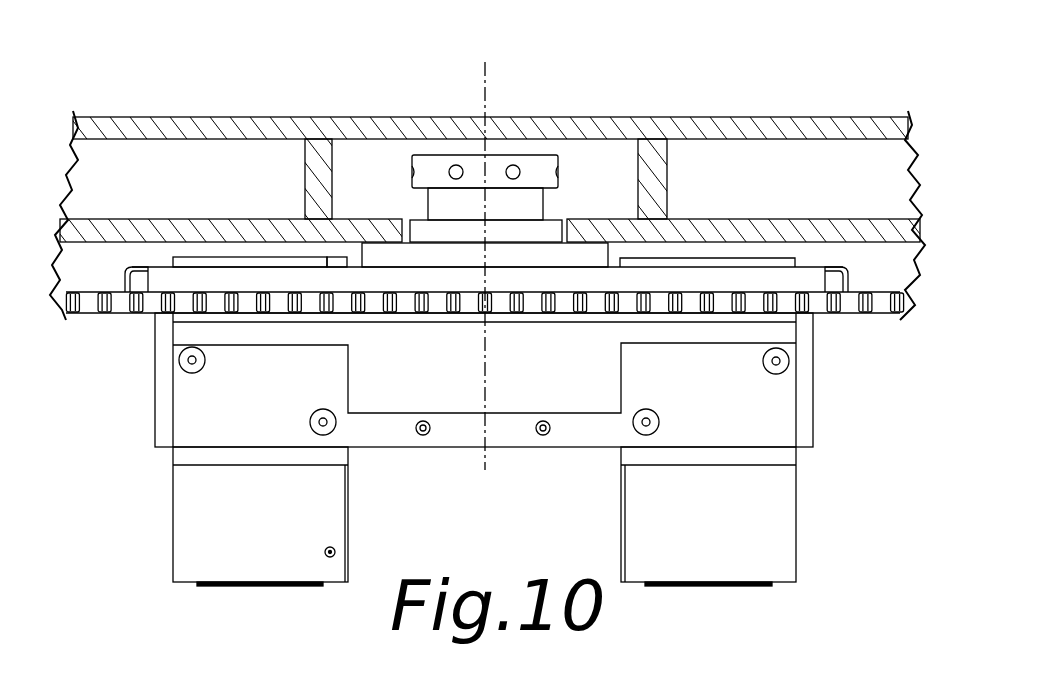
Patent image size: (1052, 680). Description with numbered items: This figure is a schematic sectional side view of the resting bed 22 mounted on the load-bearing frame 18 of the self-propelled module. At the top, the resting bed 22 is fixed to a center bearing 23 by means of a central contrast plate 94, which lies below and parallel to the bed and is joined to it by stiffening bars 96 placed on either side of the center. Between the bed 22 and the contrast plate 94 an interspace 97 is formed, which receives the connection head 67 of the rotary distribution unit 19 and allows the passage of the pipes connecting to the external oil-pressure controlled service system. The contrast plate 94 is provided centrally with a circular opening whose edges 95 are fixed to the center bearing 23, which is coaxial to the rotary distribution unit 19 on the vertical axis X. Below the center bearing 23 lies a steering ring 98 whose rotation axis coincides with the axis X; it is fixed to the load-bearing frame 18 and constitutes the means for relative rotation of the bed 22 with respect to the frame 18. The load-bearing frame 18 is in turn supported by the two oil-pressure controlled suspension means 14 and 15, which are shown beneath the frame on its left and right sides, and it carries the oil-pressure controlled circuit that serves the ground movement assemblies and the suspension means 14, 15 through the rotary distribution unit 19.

The oil-pressure controlled suspension means 14 is at (241, 536).
The oil-pressure controlled suspension means 15 is at (680, 531).
The load-bearing frame 18 is at (822, 425).
The rotary distribution unit 19 is at (564, 214).
The resting bed 22 is at (274, 114).
The center bearing 23 is at (442, 253).
The connection head 67 is at (542, 168).
The central contrast plate 94 is at (818, 233).
The edges of the circular opening 95 is at (387, 212).
The stiffening bars 96 is at (307, 167).
The interspace 97 is at (188, 158).
The steering ring 98 is at (820, 296).
The vertical axis X is at (485, 77).